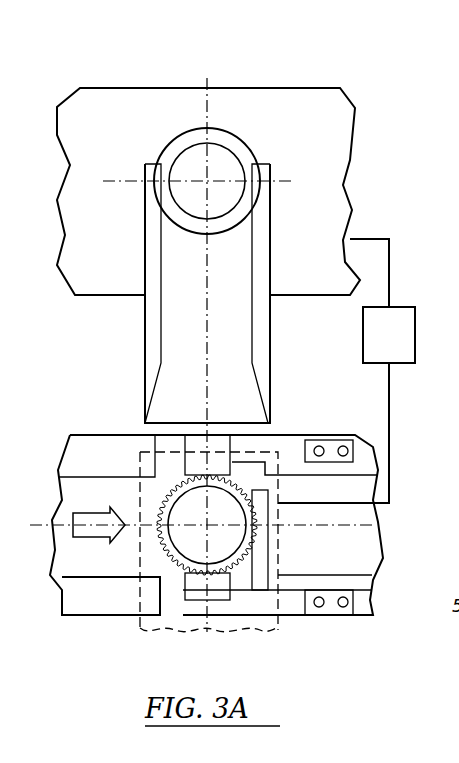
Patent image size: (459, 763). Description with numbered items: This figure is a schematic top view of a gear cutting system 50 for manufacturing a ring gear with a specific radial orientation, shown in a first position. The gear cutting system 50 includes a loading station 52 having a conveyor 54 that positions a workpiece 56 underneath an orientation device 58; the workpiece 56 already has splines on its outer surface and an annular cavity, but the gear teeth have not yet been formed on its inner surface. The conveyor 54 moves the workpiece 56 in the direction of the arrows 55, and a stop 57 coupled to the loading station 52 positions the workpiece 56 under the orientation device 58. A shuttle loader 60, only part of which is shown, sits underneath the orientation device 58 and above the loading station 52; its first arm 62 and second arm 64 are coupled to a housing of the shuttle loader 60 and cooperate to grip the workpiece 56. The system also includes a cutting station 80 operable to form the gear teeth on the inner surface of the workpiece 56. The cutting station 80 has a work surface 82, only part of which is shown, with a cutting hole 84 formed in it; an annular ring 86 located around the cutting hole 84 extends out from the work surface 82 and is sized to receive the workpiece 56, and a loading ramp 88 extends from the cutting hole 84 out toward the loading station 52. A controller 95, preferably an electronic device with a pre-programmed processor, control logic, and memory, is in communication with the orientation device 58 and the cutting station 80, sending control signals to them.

The gear cutting system 50 is at (88, 63).
The loading station 52 is at (360, 455).
The conveyor 54 is at (122, 496).
The arrows 55 is at (73, 518).
The workpiece 56 is at (237, 487).
The stop 57 is at (258, 557).
The orientation device 58 is at (140, 628).
The shuttle loader 60 is at (290, 450).
The first arm 62 is at (262, 598).
The second arm 64 is at (195, 448).
The cutting station 80 is at (312, 85).
The work surface 82 is at (121, 105).
The cutting hole 84 is at (237, 165).
The annular ring 86 is at (220, 135).
The loading ramp 88 is at (177, 306).
The controller 95 is at (382, 371).